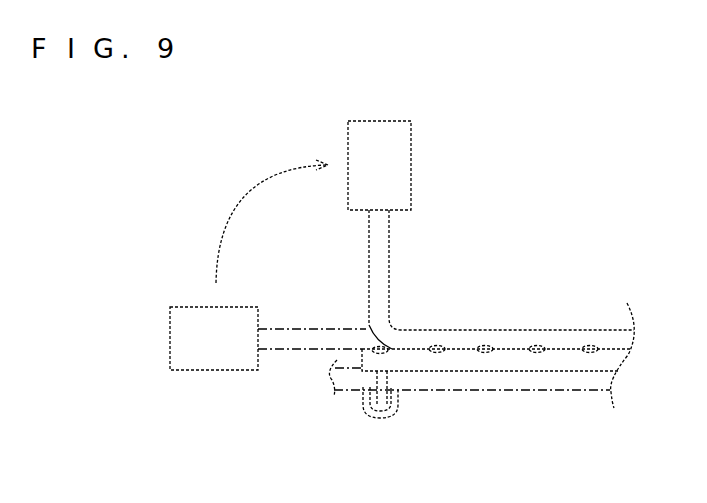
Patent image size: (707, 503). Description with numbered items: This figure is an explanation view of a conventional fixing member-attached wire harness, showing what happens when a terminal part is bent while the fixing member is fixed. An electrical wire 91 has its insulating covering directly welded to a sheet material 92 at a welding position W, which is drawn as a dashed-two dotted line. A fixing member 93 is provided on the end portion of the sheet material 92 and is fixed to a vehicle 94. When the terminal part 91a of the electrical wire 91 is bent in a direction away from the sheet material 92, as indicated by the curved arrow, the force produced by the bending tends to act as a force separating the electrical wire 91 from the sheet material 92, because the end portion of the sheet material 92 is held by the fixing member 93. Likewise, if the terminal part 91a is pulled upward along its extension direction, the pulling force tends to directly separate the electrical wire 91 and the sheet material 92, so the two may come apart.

The electrical wire 91 is at (389, 270).
The terminal part 91a is at (396, 169).
The sheet material 92 is at (510, 358).
The fixing member 93 is at (366, 415).
The vehicle 94 is at (570, 392).
The welding position W is at (379, 353).